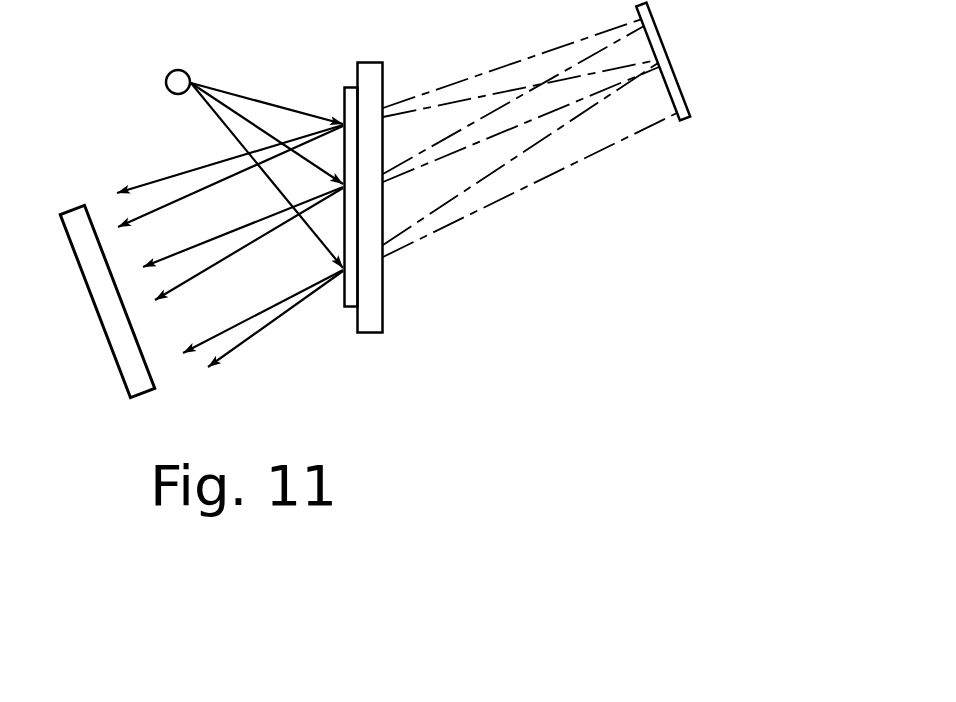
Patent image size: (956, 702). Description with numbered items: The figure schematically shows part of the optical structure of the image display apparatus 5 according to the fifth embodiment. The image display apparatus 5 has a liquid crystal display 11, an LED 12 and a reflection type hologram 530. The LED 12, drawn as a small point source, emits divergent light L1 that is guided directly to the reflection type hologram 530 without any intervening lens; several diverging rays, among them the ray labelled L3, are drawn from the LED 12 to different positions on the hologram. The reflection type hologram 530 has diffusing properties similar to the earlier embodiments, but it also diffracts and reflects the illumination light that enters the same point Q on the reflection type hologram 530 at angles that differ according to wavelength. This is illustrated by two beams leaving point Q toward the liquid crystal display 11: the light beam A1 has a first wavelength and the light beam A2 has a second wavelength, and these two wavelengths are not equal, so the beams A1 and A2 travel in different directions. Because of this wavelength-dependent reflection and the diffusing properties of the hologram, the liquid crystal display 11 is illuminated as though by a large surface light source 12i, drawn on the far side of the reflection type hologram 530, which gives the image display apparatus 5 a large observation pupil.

The LED 12 is at (177, 69).
The liquid crystal display 11 is at (75, 210).
The reflection type hologram 530 is at (351, 87).
The image display apparatus 5 is at (353, 376).
The large surface light source 12i is at (683, 121).
The point on the reflection type hologram Q is at (341, 118).
The divergent light L1 is at (267, 88).
The light ray L3 is at (267, 225).
The light beam A1 is at (157, 181).
The light beam A2 is at (147, 216).